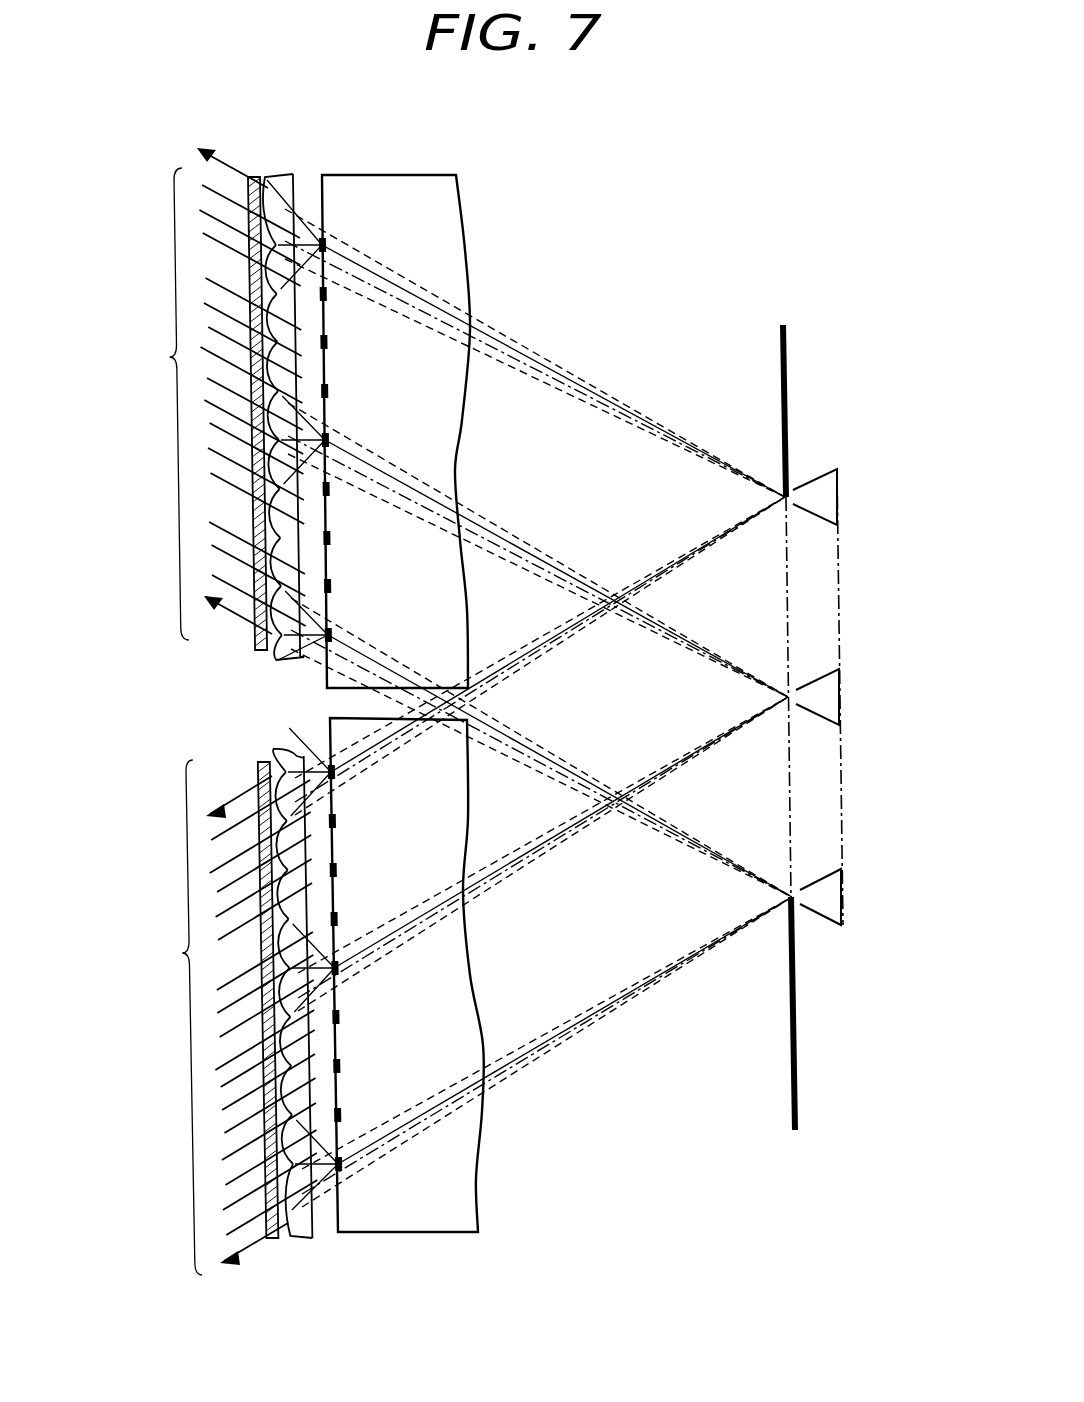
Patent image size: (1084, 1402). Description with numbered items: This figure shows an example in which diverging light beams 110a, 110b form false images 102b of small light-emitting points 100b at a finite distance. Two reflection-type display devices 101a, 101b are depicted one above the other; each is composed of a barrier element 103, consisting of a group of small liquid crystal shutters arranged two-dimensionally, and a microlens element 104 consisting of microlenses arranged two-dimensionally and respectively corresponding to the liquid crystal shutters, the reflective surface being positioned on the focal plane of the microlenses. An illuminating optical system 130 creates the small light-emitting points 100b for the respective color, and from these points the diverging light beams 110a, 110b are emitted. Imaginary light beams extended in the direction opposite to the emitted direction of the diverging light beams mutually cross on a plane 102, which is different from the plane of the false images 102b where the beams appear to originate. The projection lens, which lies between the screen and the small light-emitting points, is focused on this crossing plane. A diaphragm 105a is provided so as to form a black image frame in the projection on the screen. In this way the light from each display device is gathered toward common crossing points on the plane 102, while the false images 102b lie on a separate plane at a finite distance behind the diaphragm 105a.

The small light-emitting points 100b is at (339, 1058).
The reflection-type display device 101a is at (209, 404).
The reflection-type display device 101b is at (220, 1017).
The plane 102 is at (786, 795).
The false images 102b is at (845, 800).
The barrier element 103 is at (271, 1242).
The microlens element 104 is at (308, 1242).
The diaphragm 105a is at (797, 1050).
The diverging light beam 110a is at (226, 165).
The diverging light beam 110b is at (244, 1258).
The illuminating optical system 130 is at (403, 187).